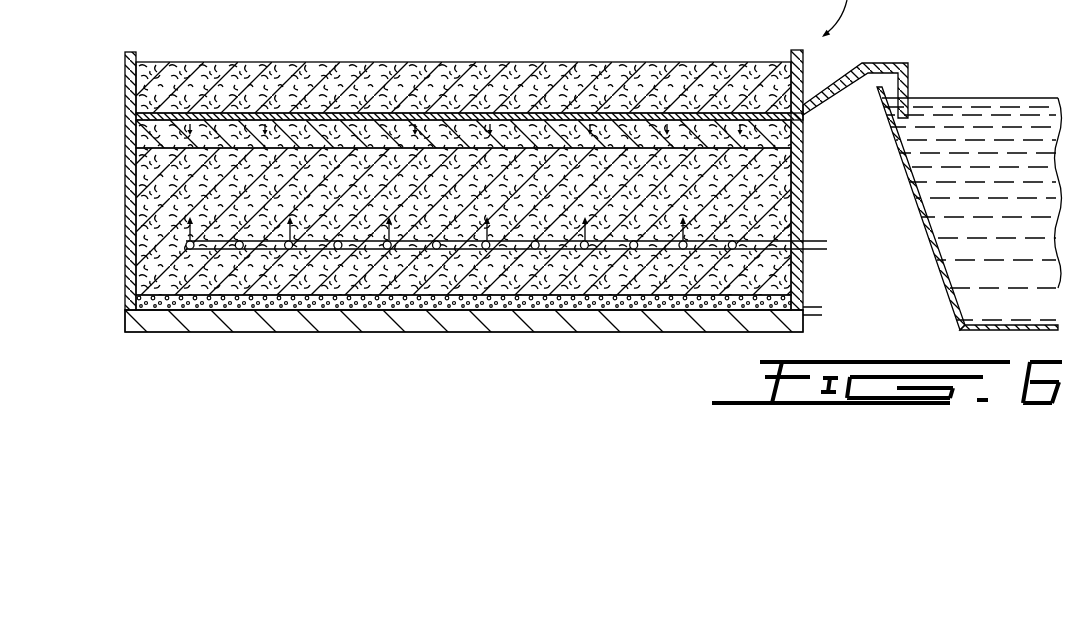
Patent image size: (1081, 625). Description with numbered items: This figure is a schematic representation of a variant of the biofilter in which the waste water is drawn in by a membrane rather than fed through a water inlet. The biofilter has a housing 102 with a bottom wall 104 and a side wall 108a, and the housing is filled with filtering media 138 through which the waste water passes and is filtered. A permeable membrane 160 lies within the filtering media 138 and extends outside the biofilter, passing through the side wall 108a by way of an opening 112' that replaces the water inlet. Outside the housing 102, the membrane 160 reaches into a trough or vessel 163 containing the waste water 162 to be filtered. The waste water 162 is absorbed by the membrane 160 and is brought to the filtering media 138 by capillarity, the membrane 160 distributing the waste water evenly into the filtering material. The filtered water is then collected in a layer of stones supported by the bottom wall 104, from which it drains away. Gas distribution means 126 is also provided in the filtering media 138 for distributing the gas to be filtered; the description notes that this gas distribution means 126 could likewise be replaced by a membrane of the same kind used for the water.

The housing 102 is at (234, 337).
The bottom wall 104 is at (463, 333).
The side wall 108a is at (800, 210).
The filtering media 138 is at (217, 190).
The permeable membrane 160 is at (482, 112).
The gas distribution means 126 is at (663, 250).
The opening 112' is at (855, 131).
The waste water 162 is at (962, 172).
The trough or vessel 163 is at (938, 268).